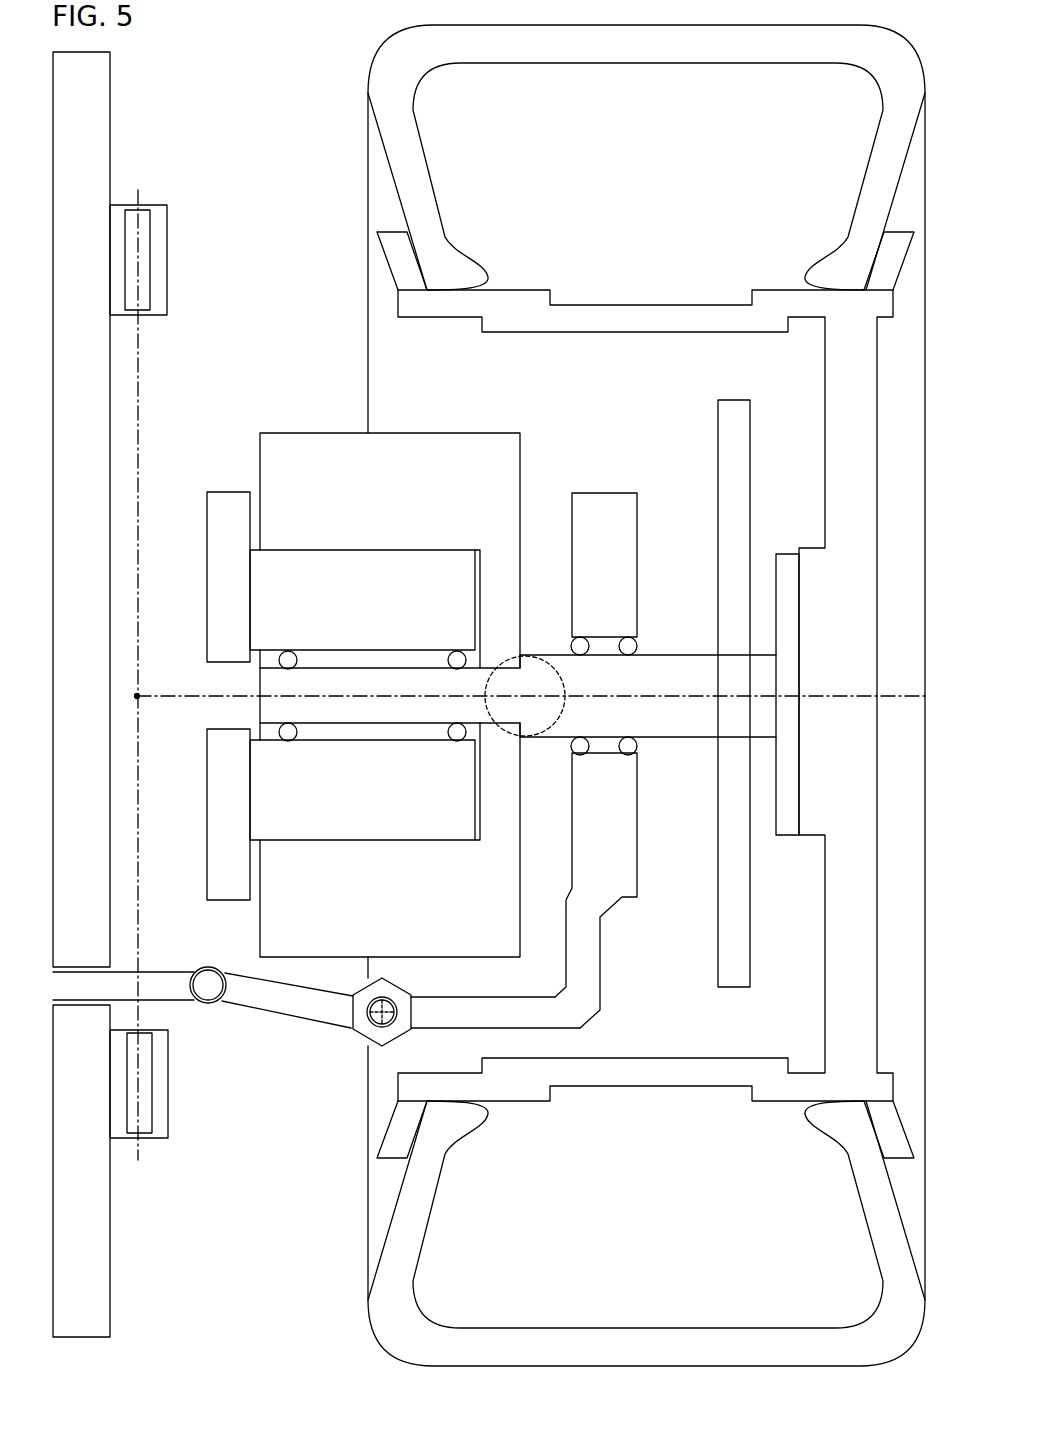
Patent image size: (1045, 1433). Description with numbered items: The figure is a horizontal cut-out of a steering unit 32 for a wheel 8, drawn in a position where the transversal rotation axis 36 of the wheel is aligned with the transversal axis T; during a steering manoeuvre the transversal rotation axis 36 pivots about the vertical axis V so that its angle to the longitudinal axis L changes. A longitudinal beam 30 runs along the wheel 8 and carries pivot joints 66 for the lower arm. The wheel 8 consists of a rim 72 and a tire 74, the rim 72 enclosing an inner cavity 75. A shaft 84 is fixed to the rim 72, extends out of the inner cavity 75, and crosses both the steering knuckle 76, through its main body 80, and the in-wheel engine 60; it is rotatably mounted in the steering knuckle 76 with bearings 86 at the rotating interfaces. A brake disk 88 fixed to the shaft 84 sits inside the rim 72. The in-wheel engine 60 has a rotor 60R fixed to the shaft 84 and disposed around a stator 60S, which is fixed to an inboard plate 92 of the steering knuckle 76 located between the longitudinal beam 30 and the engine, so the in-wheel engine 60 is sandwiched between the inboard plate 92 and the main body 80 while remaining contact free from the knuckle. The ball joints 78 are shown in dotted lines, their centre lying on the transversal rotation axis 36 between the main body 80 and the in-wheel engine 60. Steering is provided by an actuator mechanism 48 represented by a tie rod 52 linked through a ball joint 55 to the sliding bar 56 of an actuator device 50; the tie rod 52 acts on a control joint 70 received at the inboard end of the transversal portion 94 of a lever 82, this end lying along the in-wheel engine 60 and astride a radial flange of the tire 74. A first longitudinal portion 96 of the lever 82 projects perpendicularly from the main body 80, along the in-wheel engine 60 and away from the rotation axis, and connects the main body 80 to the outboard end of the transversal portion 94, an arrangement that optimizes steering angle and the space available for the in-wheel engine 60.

The wheel 8 is at (323, 145).
The longitudinal beam 30 is at (62, 376).
The steering unit 32 is at (216, 1298).
The transversal rotation axis 36 is at (838, 694).
The actuator mechanism 48 is at (262, 1064).
The actuator device 50 is at (245, 1075).
The tie rod 52 is at (310, 1000).
The ball joint 55 is at (205, 978).
The sliding bar 56 is at (183, 1003).
The in-wheel engine 60 is at (303, 408).
The rotor 60R is at (366, 513).
The stator 60S is at (382, 819).
The pivot joints 66 is at (155, 227).
The control joint 70 is at (368, 1024).
The rim 72 is at (648, 1080).
The tire 74 is at (652, 55).
The inner cavity 75 is at (484, 394).
The steering knuckle 76 is at (604, 478).
The ball joints 78 is at (567, 678).
The main body 80 is at (590, 842).
The lever 82 is at (612, 995).
The shaft 84 is at (612, 734).
The bearings 86 is at (288, 652).
The brake disk 88 is at (733, 977).
The inboard plate 92 is at (212, 829).
The transversal portion 94 is at (482, 995).
The first longitudinal portion 96 is at (583, 967).
The longitudinal axis L is at (135, 395).
The vertical axis V is at (137, 697).
The transversal axes T is at (825, 701).